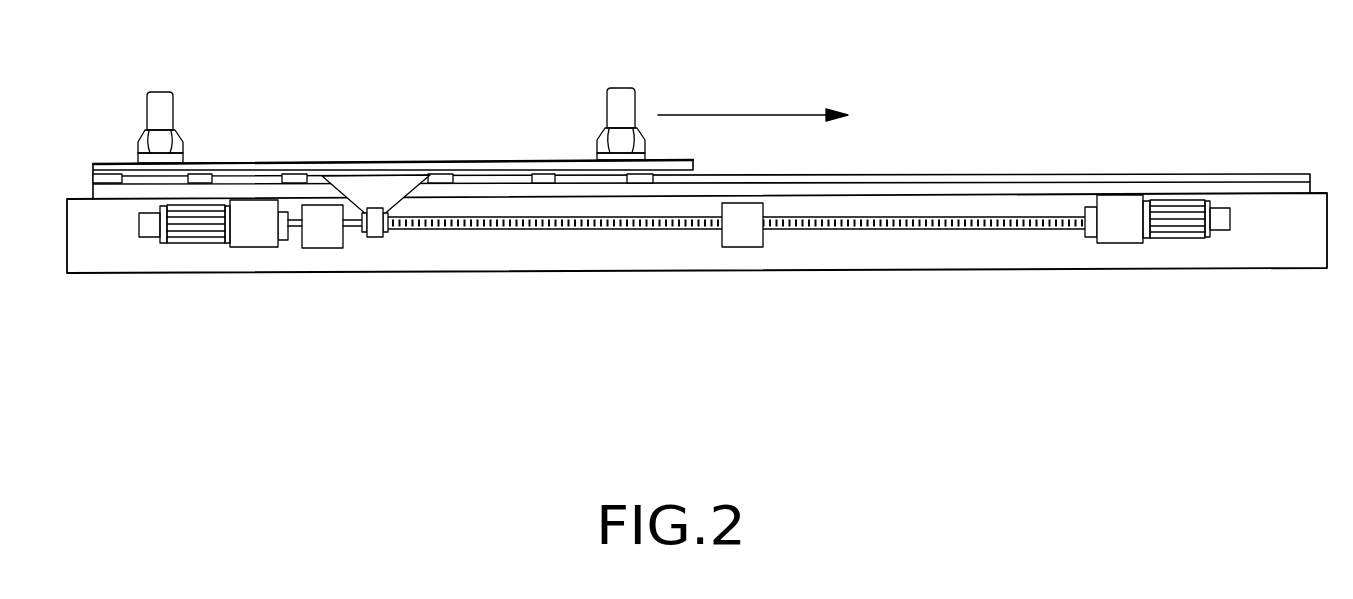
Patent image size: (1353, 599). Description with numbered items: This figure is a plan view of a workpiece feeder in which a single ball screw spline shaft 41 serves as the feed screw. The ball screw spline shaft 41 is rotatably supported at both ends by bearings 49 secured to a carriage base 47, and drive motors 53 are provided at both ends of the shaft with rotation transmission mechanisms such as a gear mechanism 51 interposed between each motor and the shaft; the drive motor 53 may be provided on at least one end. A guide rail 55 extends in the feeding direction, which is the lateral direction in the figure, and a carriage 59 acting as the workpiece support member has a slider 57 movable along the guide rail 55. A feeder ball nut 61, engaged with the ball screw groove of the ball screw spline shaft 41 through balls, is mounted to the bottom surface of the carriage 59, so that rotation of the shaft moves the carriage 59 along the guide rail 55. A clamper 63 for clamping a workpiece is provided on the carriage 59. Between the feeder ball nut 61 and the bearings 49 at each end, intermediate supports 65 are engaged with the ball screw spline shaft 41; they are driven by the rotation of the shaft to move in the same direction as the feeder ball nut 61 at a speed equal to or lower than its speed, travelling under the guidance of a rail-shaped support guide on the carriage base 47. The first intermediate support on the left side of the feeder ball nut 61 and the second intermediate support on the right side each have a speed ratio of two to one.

The ball screw spline shaft 41 is at (942, 230).
The carriage base 47 is at (1303, 253).
The bearings 49 is at (287, 243).
The gear mechanism 51 is at (253, 243).
The drive motors 53 is at (177, 243).
The guide rail 55 is at (1043, 173).
The slider 57 is at (293, 177).
The carriage 59 is at (387, 188).
The feeder ball nut 61 is at (377, 238).
The clamper 63 is at (155, 103).
The intermediate supports 65 is at (325, 247).